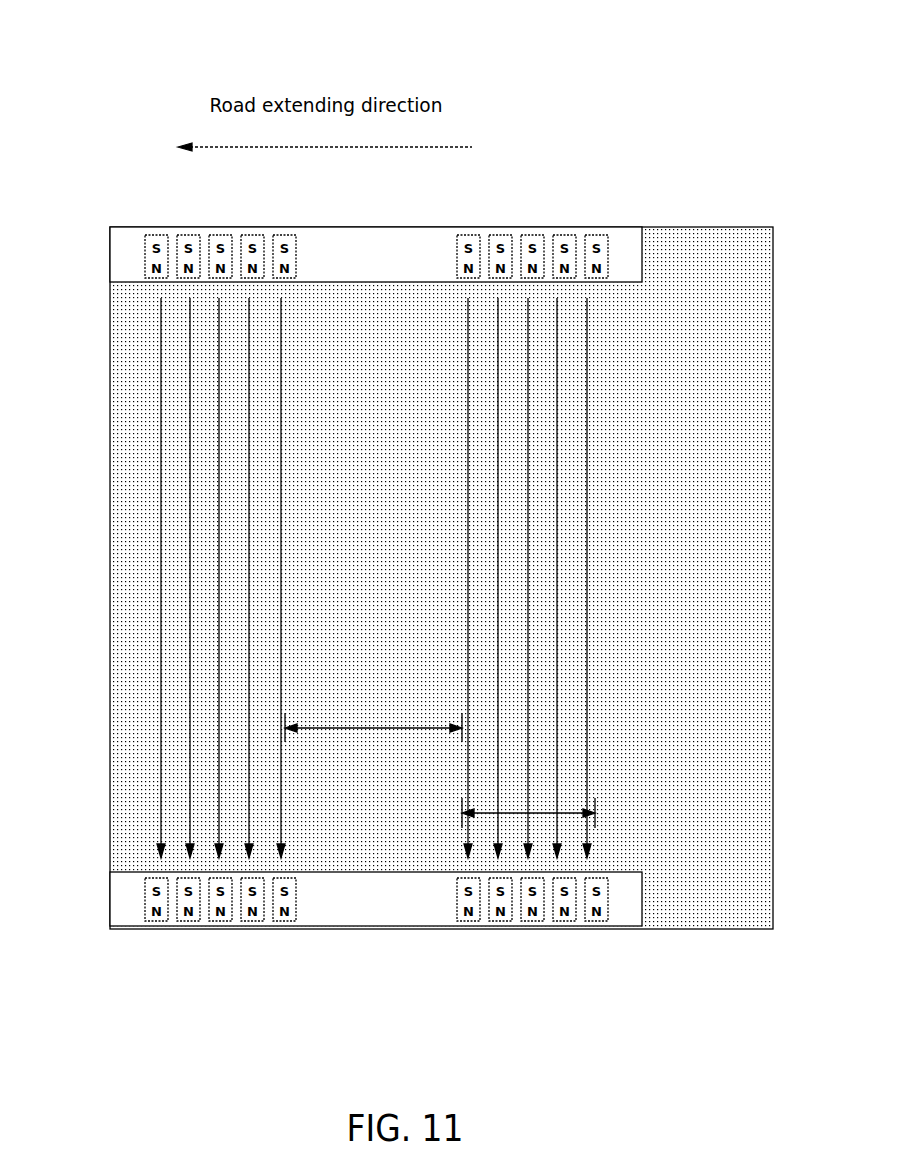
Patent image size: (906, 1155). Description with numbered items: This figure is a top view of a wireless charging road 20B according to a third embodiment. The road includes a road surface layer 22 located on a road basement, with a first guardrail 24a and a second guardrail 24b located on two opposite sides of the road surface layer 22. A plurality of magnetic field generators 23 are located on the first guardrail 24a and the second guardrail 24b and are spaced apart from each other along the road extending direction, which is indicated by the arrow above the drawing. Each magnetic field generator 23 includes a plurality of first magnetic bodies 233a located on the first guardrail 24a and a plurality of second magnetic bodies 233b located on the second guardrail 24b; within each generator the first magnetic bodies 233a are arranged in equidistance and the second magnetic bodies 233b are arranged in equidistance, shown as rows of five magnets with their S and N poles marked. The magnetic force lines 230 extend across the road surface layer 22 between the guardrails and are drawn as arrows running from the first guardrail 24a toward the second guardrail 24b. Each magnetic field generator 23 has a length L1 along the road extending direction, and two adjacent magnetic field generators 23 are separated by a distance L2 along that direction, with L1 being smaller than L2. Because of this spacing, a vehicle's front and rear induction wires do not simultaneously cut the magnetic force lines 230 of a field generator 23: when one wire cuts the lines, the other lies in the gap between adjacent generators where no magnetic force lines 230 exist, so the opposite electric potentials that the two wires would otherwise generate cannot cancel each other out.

The wireless charging road 20B is at (332, 61).
The road surface layer 22 is at (110, 697).
The magnetic field generator 23 is at (285, 921).
The first guardrail 24a is at (133, 257).
The second guardrail 24b is at (130, 905).
The magnetic force lines 230 is at (468, 352).
The first magnetic bodies 233a is at (150, 245).
The second magnetic bodies 233b is at (297, 907).
The length of magnetic field generator L1 is at (528, 809).
The distance between adjacent magnetic field generators L2 is at (373, 716).